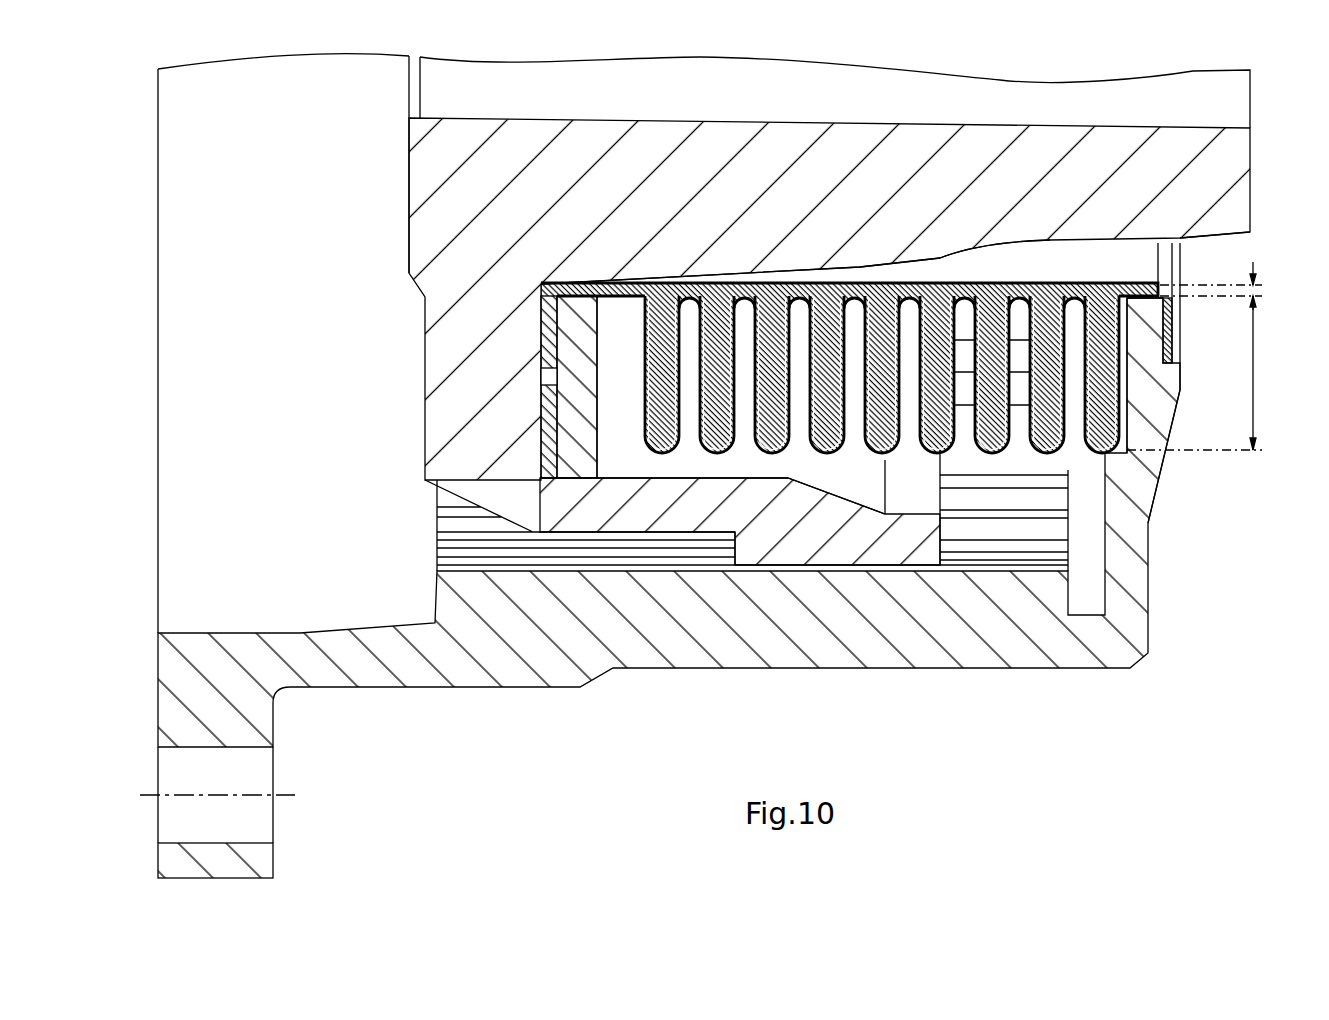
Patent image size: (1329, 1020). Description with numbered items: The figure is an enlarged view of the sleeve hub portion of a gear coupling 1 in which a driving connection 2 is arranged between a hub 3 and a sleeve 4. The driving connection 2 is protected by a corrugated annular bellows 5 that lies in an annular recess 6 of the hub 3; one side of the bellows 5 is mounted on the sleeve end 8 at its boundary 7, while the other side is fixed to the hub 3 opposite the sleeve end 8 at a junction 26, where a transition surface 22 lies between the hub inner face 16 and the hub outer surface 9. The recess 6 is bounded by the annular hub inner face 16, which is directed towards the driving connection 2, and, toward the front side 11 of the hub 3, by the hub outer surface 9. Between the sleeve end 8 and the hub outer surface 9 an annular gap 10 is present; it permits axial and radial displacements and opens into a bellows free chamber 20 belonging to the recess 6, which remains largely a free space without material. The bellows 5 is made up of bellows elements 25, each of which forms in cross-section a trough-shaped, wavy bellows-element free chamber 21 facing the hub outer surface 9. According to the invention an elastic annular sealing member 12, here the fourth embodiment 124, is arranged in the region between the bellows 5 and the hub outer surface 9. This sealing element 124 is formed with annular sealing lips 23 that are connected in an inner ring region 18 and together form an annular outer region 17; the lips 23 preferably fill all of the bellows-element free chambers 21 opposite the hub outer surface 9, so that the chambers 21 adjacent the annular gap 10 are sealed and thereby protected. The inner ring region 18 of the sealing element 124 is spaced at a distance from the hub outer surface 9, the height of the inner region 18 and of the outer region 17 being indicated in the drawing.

The gear coupling 1 is at (723, 466).
The driving connection 2 is at (751, 552).
The hub 3 is at (700, 158).
The sleeve 4 is at (628, 656).
The bellows 5 is at (742, 505).
The recess 6 is at (612, 387).
The boundary 7 is at (1150, 317).
The sleeve end 8 is at (1160, 372).
The hub outer surface 9 is at (1237, 240).
The annular gap 10 is at (1176, 250).
The front side 11 is at (1252, 156).
The elastic annular sealing member 12 is at (1157, 408).
The hub inner face 16 is at (847, 484).
The annular outer region 17 is at (1257, 378).
The inner ring region 18 is at (1258, 290).
The bellows free chamber 20 is at (987, 270).
The bellows-element free chamber 21 is at (646, 436).
The transition surface 22 is at (540, 373).
The annular sealing lips 23 is at (704, 430).
The bellows element 25 is at (868, 442).
The junction 26 is at (540, 348).
The fourth elastic annular sealing element 124 is at (1220, 456).